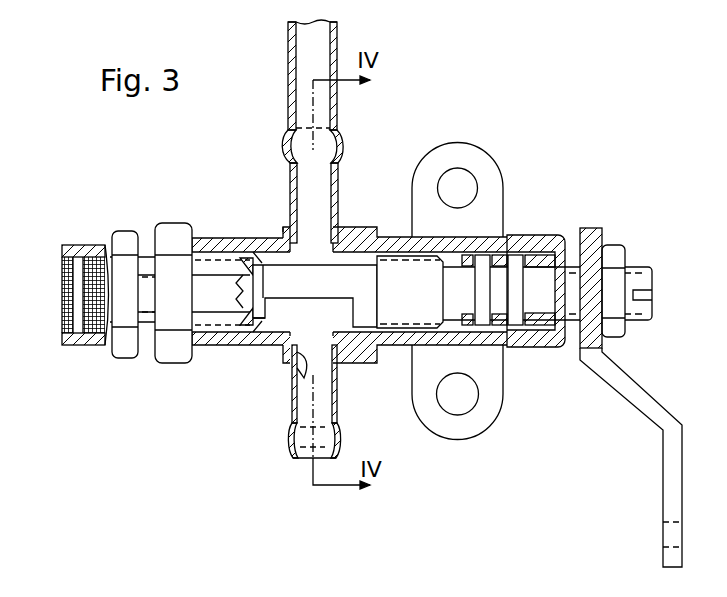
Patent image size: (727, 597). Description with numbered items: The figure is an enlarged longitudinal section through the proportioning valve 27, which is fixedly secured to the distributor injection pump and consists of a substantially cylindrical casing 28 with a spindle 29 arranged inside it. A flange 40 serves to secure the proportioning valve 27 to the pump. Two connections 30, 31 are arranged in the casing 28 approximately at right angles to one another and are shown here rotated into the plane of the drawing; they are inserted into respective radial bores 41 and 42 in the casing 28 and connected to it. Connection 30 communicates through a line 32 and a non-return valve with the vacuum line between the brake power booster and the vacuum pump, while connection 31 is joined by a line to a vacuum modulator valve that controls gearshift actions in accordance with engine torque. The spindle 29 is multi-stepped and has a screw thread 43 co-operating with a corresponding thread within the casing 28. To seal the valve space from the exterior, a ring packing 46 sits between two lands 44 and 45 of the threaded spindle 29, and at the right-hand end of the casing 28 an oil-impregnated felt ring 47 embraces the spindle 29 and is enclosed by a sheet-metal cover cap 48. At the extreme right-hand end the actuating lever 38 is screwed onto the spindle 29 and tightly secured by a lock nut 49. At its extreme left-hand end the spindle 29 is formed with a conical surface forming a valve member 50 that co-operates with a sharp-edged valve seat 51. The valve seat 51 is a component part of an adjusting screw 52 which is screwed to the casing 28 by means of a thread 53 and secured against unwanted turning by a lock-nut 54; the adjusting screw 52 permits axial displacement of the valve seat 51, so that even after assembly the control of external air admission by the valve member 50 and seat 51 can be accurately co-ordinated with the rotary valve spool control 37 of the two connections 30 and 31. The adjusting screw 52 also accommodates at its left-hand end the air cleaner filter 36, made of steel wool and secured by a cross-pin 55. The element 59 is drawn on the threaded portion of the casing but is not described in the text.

The proportioning valve 27 is at (272, 236).
The casing 28 is at (486, 249).
The spindle 29 is at (402, 275).
The connection 30 is at (340, 189).
The connection 31 is at (335, 402).
The line 32 is at (288, 62).
The air cleaner filter 36 is at (63, 275).
The rotary valve spool control 37 is at (288, 346).
The actuating lever 38 is at (663, 450).
The flange 40 is at (493, 190).
The radial bore 41 is at (347, 237).
The radial bore 42 is at (300, 373).
The screw thread 43 is at (405, 341).
The land 44 is at (493, 331).
The land 45 is at (508, 323).
The ring packing 46 is at (513, 243).
The oil-impregnated felt ring 47 is at (548, 341).
The sheet-metal cover cap 48 is at (570, 245).
The lock nut 49 is at (611, 258).
The valve member 50 is at (255, 339).
The valve seat 51 is at (272, 236).
The adjusting screw 52 is at (145, 268).
The thread 53 is at (263, 326).
The lock-nut 54 is at (174, 233).
The cross-pin 55 is at (80, 320).
The threaded tube 59 is at (208, 290).